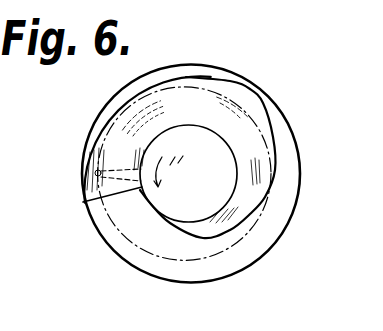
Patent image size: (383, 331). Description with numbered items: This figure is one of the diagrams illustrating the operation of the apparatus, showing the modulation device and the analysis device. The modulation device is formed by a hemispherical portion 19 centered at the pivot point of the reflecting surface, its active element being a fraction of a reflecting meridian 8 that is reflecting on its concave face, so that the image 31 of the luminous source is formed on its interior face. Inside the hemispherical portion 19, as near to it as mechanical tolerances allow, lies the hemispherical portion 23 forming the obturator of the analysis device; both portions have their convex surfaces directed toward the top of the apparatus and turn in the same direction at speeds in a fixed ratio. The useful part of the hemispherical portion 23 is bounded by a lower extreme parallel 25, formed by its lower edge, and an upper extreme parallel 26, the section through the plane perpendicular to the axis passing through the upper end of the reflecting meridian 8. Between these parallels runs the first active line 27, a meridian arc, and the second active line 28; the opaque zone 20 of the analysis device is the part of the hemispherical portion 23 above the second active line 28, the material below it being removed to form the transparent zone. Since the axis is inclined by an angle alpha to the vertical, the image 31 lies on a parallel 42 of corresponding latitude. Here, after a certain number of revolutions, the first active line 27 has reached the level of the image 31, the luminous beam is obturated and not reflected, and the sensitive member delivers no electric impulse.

The reflecting meridian 8 is at (95, 173).
The hemispherical portion 19 is at (103, 223).
The opaque zone 20 is at (186, 98).
The hemispherical portion 23 is at (250, 115).
The lower extreme parallel 25 is at (106, 106).
The upper extreme parallel 26 is at (145, 150).
The first active line 27 is at (122, 195).
The second active line 28 is at (277, 152).
The image of the luminous source 31 is at (82, 197).
The parallel 42 is at (127, 245).